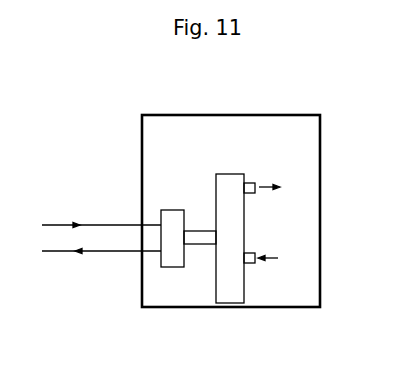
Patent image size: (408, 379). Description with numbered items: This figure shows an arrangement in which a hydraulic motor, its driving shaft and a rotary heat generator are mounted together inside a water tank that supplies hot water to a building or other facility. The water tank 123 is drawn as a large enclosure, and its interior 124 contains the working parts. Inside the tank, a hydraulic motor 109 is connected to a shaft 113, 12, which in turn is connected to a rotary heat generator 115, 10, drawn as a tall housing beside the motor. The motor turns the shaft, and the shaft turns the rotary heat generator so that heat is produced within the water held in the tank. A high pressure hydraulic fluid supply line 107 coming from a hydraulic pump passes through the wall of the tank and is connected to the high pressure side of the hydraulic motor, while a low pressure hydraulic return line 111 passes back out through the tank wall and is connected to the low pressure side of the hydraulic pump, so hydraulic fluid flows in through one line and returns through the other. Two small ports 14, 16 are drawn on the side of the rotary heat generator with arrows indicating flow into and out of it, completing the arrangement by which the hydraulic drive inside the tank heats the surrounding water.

The high pressure hydraulic fluid supply line 107 is at (57, 225).
The hydraulic motor 109 is at (172, 220).
The low pressure hydraulic return line 111 is at (54, 252).
The shaft 113 is at (188, 293).
The shaft 12 is at (203, 245).
The rotary heat generator 115 is at (198, 190).
The hydraulic motor 10 is at (227, 184).
The inlet port 14 is at (263, 258).
The outlet port 16 is at (263, 187).
The water tank 123 is at (321, 203).
The interior chamber 124 is at (301, 153).